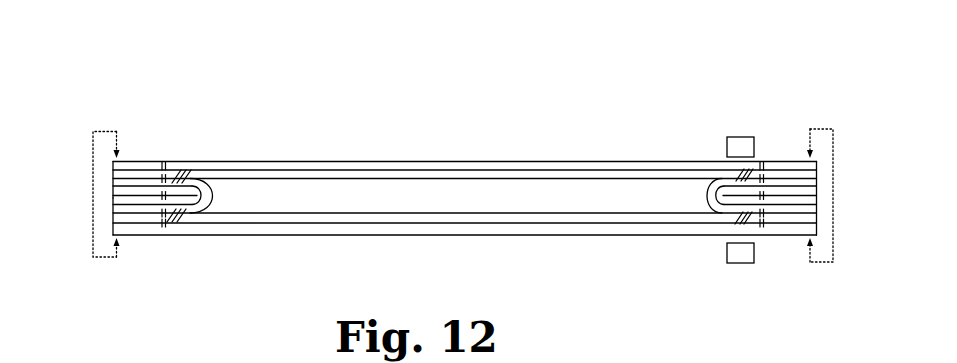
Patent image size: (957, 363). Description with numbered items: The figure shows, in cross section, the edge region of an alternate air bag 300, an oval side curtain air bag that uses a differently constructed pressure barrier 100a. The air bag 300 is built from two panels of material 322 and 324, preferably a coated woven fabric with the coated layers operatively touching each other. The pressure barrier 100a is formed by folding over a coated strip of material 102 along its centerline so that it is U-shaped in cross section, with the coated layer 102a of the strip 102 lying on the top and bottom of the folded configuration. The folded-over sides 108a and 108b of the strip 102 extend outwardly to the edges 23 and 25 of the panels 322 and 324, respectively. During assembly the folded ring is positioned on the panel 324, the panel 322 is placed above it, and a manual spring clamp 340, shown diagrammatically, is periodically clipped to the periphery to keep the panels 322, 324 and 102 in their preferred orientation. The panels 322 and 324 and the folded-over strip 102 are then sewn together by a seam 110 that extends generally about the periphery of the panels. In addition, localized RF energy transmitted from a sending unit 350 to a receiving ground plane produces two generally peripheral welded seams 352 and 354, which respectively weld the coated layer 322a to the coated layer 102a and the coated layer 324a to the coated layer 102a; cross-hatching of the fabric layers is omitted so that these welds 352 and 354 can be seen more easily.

The edge 23 is at (113, 168).
The edge 25 is at (113, 220).
The pressure barrier 100a is at (215, 197).
The strip of material 102 is at (442, 191).
The coated layer 102a is at (707, 196).
The side 108a is at (140, 178).
The side 108b is at (137, 211).
The seam 110 is at (165, 240).
The air bag 300 is at (430, 198).
The panel 322 is at (196, 156).
The coated layer 322a is at (634, 178).
The panel 324 is at (215, 234).
The coated layer 324a is at (577, 223).
The spring clamp 340 is at (90, 124).
The sending unit 350 is at (727, 140).
The welded seam 352 is at (737, 175).
The welded seam 354 is at (740, 222).